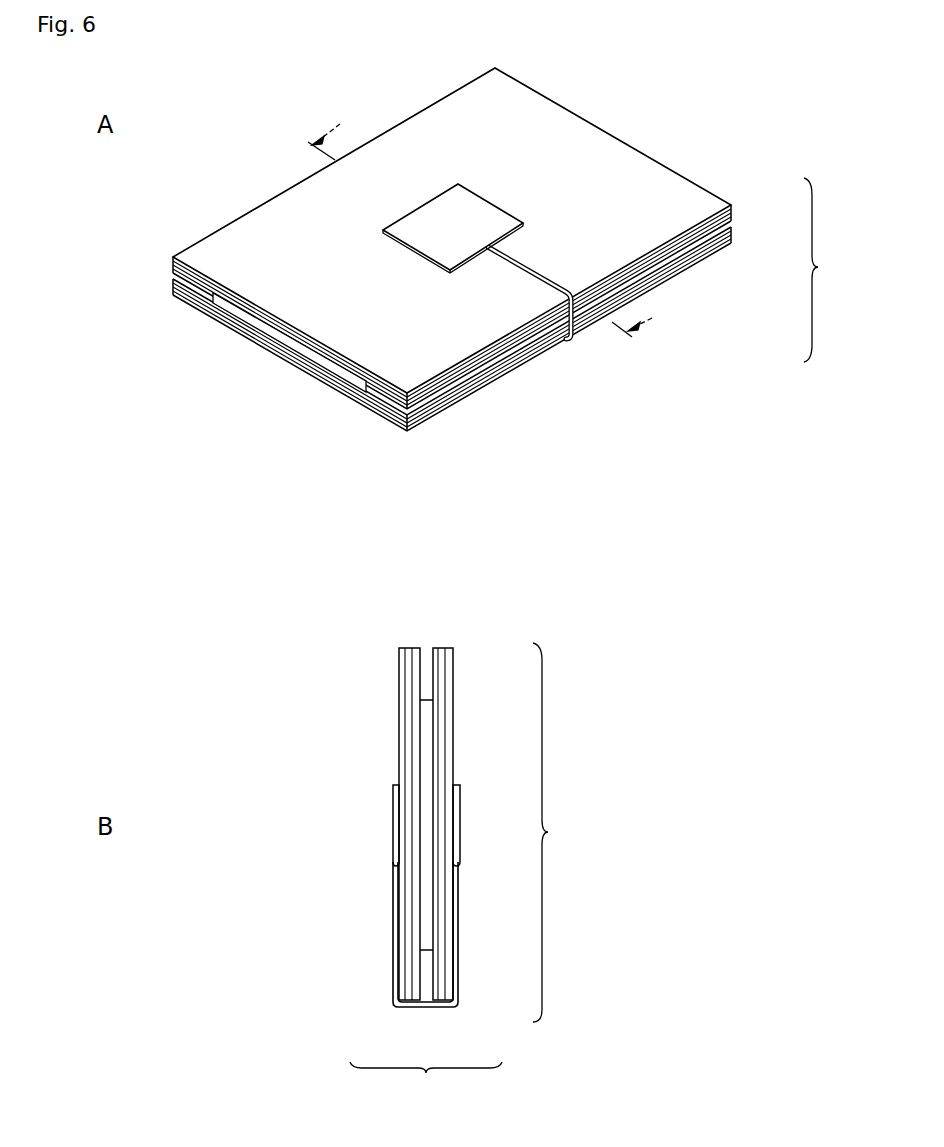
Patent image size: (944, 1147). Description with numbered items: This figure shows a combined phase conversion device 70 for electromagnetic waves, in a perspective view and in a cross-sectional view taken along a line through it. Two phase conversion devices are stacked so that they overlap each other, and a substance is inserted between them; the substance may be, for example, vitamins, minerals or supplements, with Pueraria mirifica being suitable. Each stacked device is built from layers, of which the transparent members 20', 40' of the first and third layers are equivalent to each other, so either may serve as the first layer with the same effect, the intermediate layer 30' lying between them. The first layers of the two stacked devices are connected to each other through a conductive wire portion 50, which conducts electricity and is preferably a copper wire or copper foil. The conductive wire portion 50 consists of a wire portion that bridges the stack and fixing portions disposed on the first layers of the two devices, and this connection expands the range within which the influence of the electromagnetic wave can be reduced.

The transparent member 20' is at (286, 353).
The separator 30' is at (304, 355).
The transparent member 40' is at (323, 355).
The conductive wire portion 50 is at (426, 977).
The phase conversion device 70 is at (478, 586).